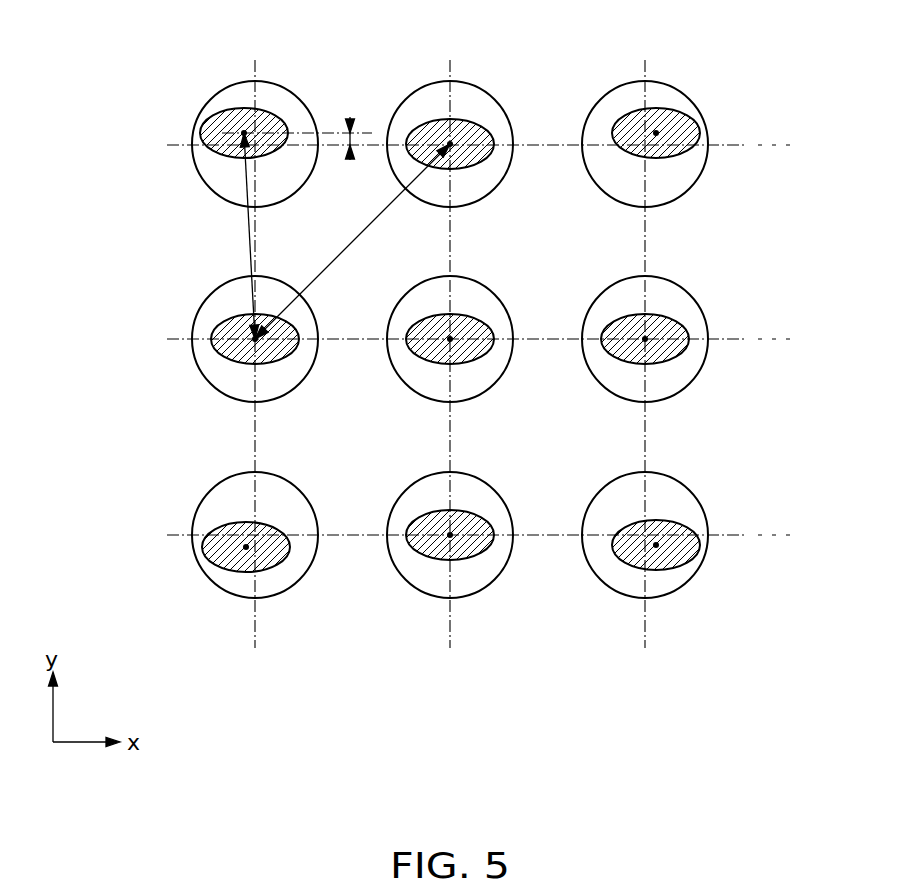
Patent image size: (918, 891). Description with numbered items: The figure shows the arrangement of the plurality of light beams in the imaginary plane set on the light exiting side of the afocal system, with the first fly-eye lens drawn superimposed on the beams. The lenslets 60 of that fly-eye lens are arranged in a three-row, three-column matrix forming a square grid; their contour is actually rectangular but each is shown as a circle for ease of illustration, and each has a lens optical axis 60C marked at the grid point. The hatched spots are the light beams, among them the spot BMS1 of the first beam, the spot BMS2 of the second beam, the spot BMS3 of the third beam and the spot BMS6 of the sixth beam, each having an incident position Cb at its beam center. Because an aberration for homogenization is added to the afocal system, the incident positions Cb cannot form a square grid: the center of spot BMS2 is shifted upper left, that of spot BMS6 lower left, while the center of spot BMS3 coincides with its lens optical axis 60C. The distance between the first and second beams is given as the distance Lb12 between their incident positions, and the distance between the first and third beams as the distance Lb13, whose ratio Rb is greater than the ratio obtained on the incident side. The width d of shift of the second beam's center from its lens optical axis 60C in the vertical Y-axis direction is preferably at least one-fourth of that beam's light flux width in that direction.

The lenslet 60 is at (273, 82).
The lens optical axis 60C is at (250, 128).
The incident position Cb is at (239, 110).
The spot of first light beam BMS1 is at (237, 316).
The spot of second light beam BMS2 is at (241, 109).
The spot of third light beam BMS3 is at (461, 119).
The spot of sixth light beam BMS6 is at (240, 568).
The distance between first and second incident positions Lb12 is at (248, 223).
The distance between first and third incident positions Lb13 is at (370, 222).
The width of shift d is at (360, 138).